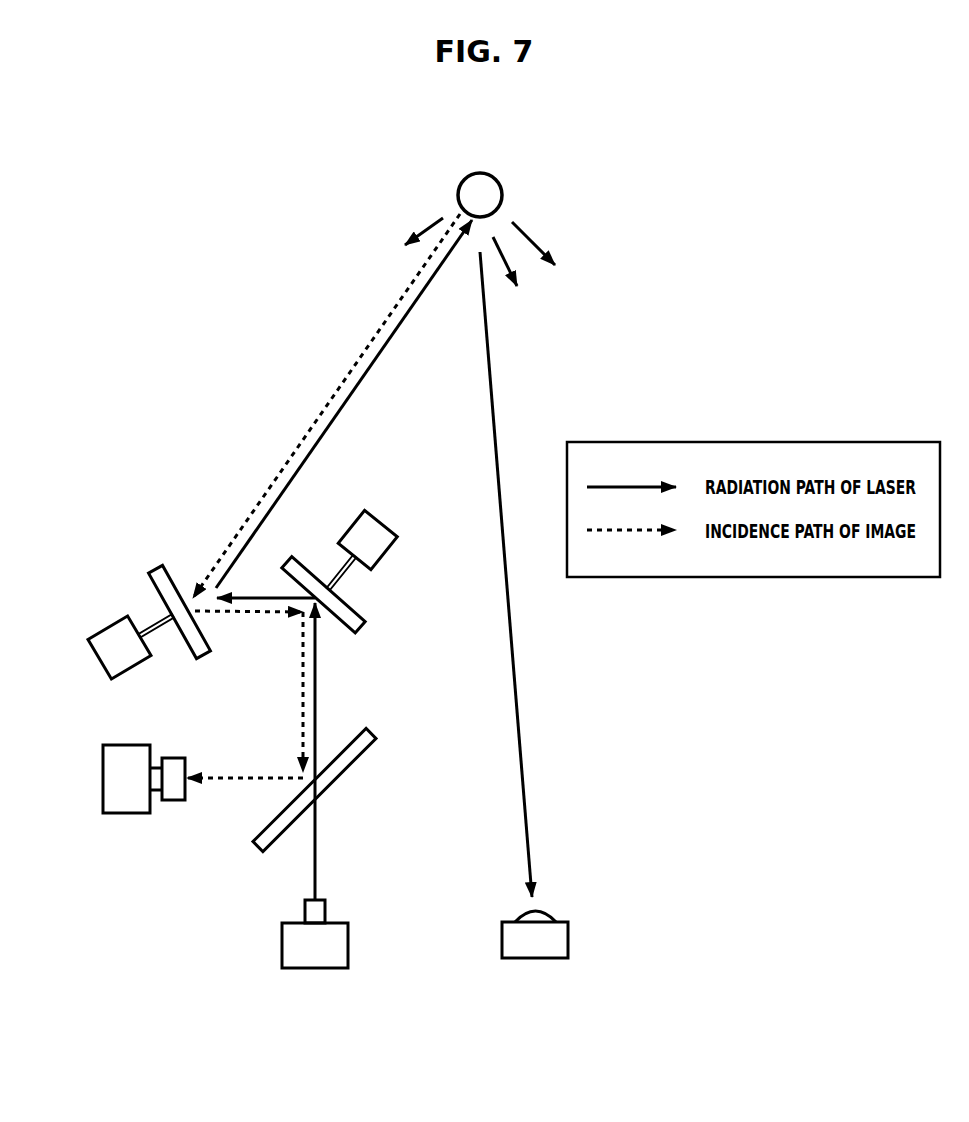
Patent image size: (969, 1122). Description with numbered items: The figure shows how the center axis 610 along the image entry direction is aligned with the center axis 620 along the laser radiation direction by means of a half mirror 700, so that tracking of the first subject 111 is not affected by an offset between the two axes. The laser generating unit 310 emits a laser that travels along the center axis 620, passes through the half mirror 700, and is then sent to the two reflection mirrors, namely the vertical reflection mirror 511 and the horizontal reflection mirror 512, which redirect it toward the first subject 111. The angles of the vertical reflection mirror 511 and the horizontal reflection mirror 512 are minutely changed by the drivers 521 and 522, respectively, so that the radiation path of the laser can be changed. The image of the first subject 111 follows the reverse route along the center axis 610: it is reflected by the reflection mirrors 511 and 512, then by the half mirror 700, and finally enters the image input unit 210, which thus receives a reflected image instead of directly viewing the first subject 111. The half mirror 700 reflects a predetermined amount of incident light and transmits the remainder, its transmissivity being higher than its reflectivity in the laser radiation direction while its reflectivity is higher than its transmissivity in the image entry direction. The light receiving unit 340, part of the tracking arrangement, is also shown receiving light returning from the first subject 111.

The first subject 111 is at (470, 173).
The image input unit 210 is at (103, 774).
The laser generating unit 310 is at (309, 968).
The light receiving unit 340 is at (530, 958).
The vertical reflection mirror 511 is at (153, 570).
The horizontal reflection mirror 512 is at (358, 612).
The driver 521 is at (105, 626).
The driver 522 is at (395, 528).
The center axis along the image entry direction 610 is at (303, 702).
The center axis along the laser radiation direction 620 is at (317, 688).
The half mirror 700 is at (371, 728).